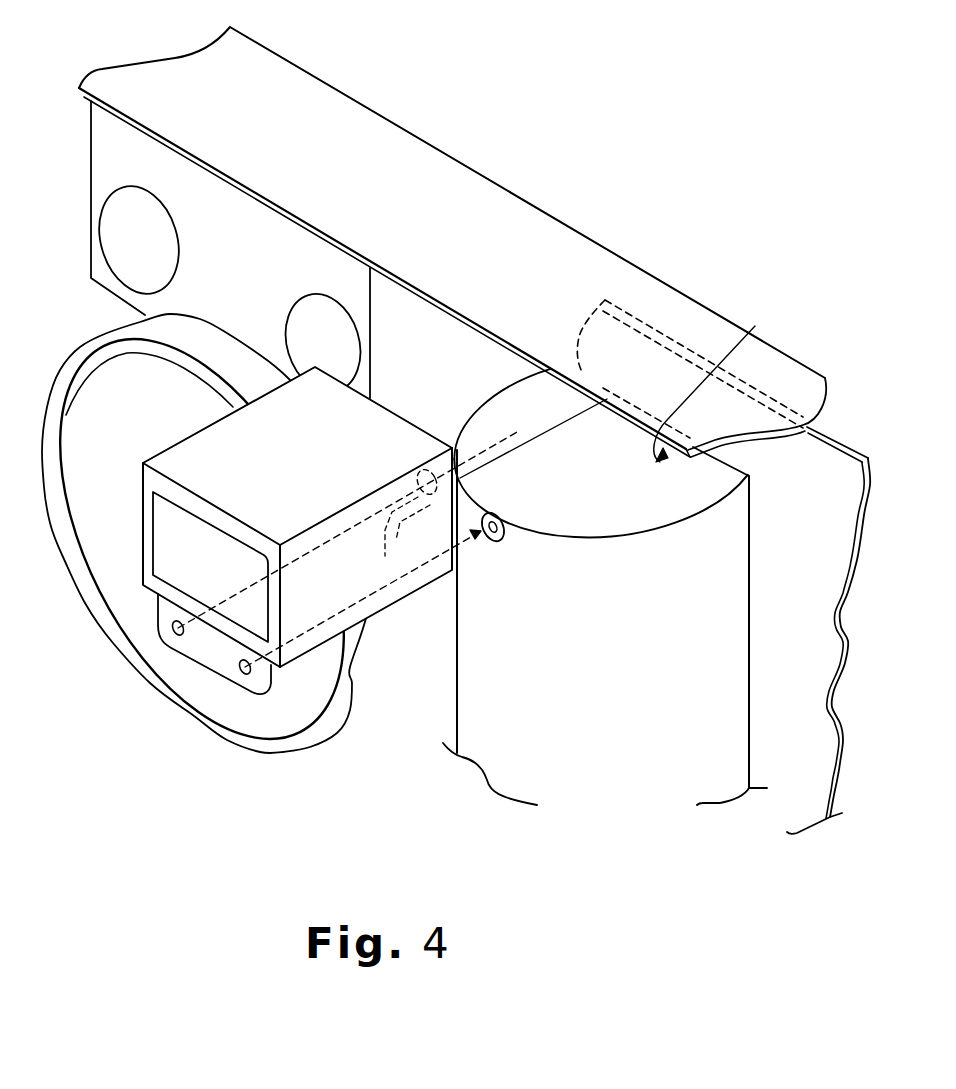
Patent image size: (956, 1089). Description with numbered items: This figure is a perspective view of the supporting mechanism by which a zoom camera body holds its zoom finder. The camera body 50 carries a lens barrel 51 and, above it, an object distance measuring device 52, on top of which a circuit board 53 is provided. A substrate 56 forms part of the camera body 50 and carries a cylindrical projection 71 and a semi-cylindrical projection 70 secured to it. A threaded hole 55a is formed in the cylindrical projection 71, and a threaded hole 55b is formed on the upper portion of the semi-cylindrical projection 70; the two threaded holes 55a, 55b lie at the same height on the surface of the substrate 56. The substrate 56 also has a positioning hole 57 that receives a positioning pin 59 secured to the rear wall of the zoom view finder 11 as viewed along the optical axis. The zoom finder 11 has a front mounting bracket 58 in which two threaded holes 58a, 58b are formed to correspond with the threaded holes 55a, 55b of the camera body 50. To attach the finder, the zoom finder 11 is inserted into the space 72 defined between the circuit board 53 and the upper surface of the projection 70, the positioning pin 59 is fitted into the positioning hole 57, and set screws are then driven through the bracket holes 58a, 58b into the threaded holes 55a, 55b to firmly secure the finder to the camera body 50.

The zoom view finder 11 is at (186, 450).
The camera body 50 is at (670, 164).
The lens barrel 51 is at (142, 325).
The object distance measuring device 52 is at (120, 174).
The circuit board 53 is at (480, 187).
The threaded hole 55a is at (442, 452).
The threaded hole 55b is at (502, 538).
The substrate 56 is at (777, 560).
The positioning hole 57 is at (612, 388).
The front mounting bracket 58 is at (212, 660).
The threaded hole 58a is at (172, 634).
The threaded hole 58b is at (246, 676).
The positioning pin 59 is at (389, 533).
The semi-cylindrical projection 70 is at (700, 762).
The cylindrical projection 71 is at (361, 516).
The space 72 is at (719, 383).